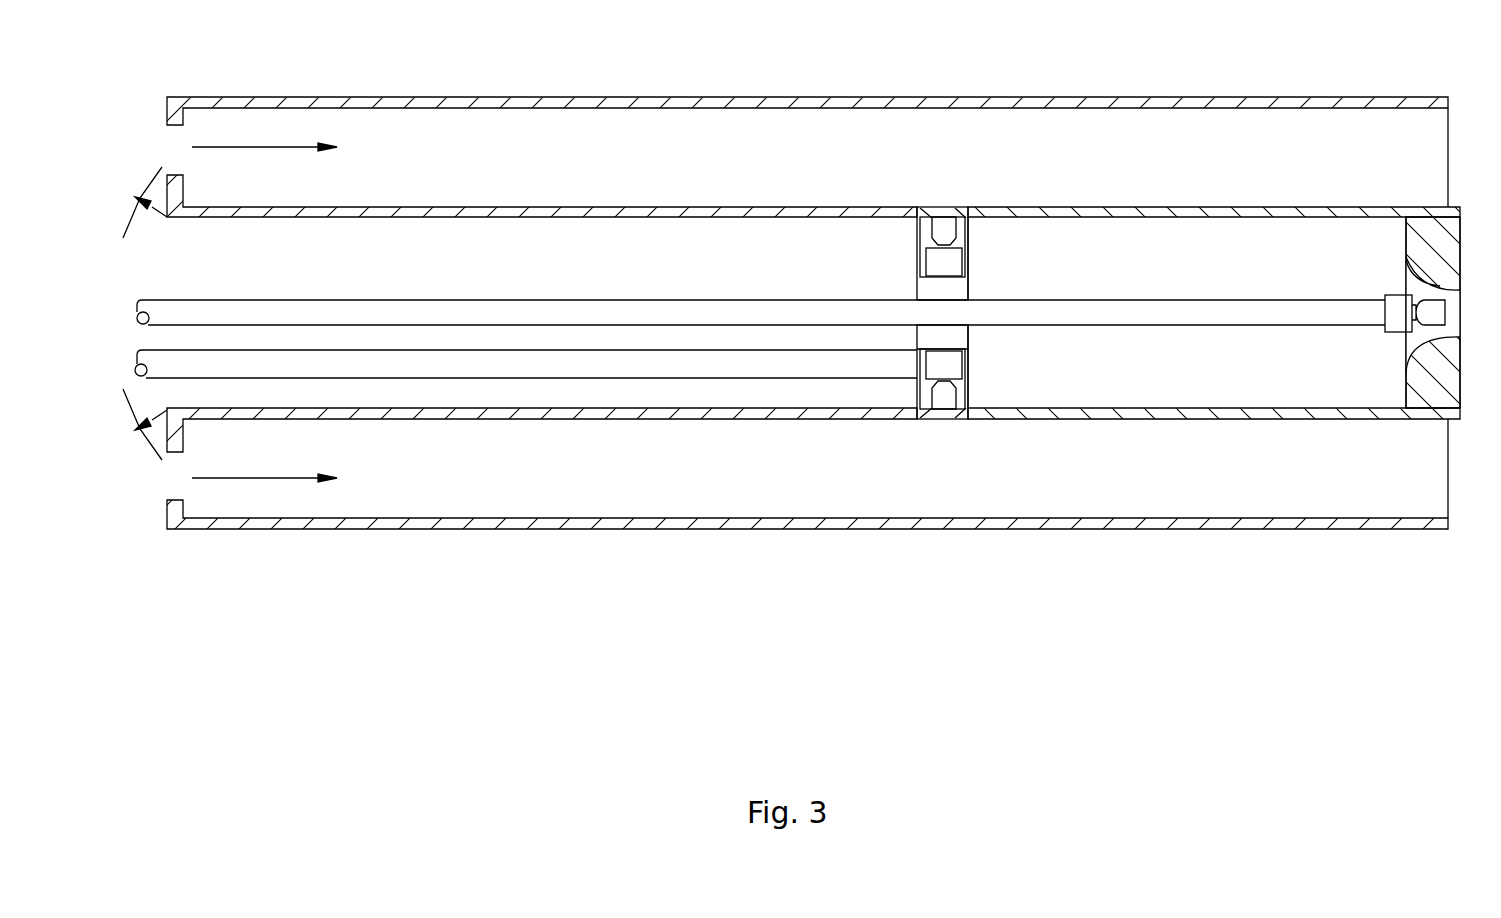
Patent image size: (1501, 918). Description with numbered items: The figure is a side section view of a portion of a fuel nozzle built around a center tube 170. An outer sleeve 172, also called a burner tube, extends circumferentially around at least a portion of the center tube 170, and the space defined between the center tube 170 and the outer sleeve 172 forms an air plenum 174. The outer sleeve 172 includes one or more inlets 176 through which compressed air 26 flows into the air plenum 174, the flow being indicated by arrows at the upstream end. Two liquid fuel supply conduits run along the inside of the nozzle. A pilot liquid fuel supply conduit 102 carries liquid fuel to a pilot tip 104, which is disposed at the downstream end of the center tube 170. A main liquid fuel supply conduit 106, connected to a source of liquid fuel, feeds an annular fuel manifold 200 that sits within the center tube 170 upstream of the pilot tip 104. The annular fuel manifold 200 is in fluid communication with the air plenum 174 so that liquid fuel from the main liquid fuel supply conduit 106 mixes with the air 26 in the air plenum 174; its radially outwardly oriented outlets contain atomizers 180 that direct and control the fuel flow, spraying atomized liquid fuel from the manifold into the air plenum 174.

The compressed air 26 is at (300, 147).
The inlets 176 is at (173, 153).
The outer sleeve 172 is at (970, 100).
The air plenum 174 is at (712, 158).
The annular fuel manifold 200 is at (960, 233).
The center tube 170 is at (1148, 215).
The pilot liquid fuel supply conduit 102 is at (1078, 318).
The main liquid fuel supply conduit 106 is at (614, 367).
The atomizer 180 is at (947, 400).
The pilot tip 104 is at (1435, 383).